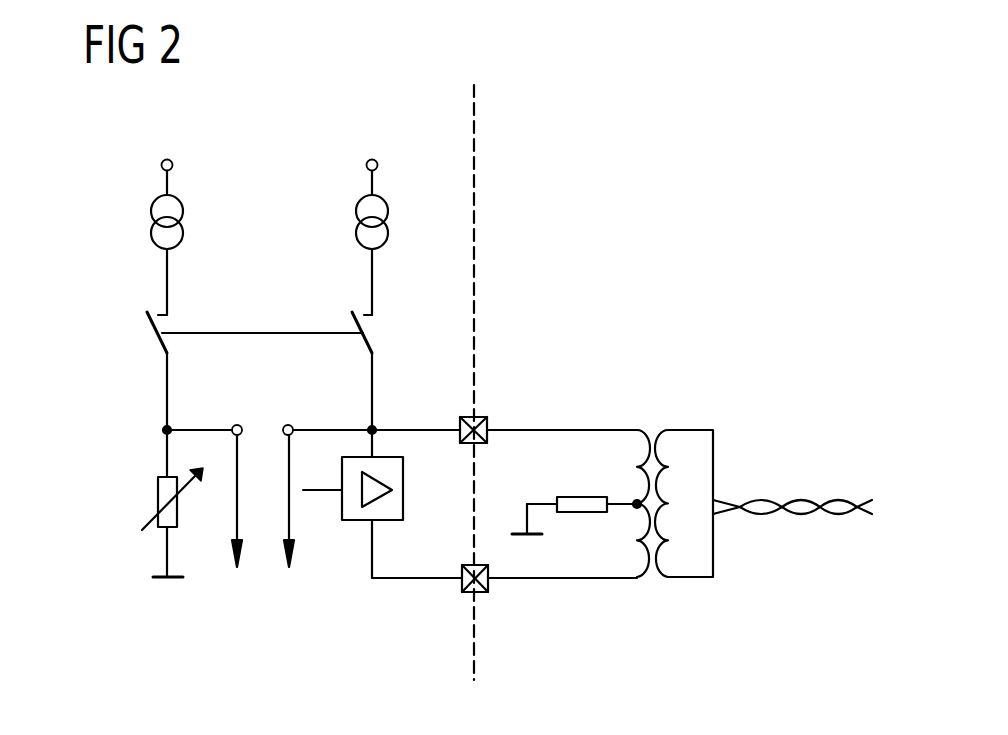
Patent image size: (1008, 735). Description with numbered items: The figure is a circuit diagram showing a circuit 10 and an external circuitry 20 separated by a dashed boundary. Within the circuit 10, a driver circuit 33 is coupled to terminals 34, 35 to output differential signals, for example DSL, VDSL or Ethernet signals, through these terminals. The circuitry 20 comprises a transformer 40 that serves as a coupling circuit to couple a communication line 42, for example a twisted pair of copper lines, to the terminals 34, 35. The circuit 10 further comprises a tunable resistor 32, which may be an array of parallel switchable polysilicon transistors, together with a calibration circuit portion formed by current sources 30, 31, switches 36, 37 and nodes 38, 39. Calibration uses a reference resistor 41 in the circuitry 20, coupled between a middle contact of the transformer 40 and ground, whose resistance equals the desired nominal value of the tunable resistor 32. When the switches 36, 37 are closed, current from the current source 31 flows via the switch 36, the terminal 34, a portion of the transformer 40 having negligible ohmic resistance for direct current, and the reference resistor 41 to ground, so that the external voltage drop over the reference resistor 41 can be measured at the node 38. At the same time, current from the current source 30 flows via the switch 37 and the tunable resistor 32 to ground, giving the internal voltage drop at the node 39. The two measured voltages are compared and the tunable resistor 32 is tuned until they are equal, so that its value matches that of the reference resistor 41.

The circuit 10 is at (291, 118).
The circuitry 20 is at (659, 120).
The current source 30 is at (152, 207).
The current source 31 is at (357, 207).
The tunable resistor 32 is at (157, 494).
The driver circuit 33 is at (404, 485).
The terminal 34 is at (478, 420).
The terminal 35 is at (471, 593).
The switch 36 is at (370, 341).
The switch 37 is at (149, 324).
The node 38 is at (289, 424).
The node 39 is at (237, 424).
The transformer 40 is at (651, 406).
The reference resistor 41 is at (580, 496).
The communication line 42 is at (836, 500).